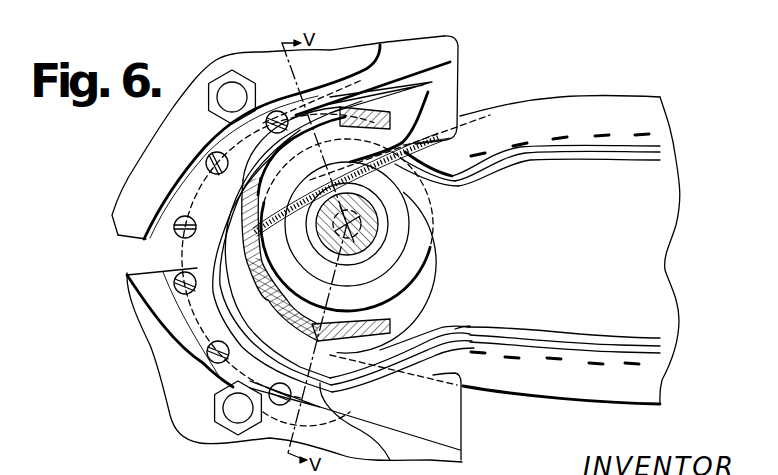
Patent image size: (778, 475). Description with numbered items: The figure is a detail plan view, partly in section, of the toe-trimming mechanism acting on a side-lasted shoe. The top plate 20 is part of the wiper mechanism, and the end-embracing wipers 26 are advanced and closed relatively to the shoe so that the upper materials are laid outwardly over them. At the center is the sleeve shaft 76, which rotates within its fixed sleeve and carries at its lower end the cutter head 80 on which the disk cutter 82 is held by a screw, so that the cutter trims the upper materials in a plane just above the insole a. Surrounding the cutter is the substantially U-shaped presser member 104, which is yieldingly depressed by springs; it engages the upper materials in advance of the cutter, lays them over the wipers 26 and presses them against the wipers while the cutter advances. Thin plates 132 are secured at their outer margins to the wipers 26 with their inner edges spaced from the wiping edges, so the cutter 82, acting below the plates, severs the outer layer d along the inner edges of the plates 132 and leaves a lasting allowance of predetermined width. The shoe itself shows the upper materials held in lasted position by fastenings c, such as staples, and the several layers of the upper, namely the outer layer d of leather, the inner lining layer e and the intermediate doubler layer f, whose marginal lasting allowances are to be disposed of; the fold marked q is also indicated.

The top plate 20 is at (263, 62).
The end-embracing wipers 26 is at (447, 50).
The presser member 104 is at (333, 200).
The thin plates 132 is at (197, 268).
The sleeve shaft 76 is at (363, 198).
The cutter head 80 is at (397, 212).
The disk cutter 82 is at (428, 227).
The insole a is at (576, 231).
The fastenings c is at (563, 138).
The outer layer d is at (575, 141).
The inner layer (lining) e is at (618, 159).
The intermediate layer (doubler) f is at (597, 152).
The belt fold q is at (455, 327).